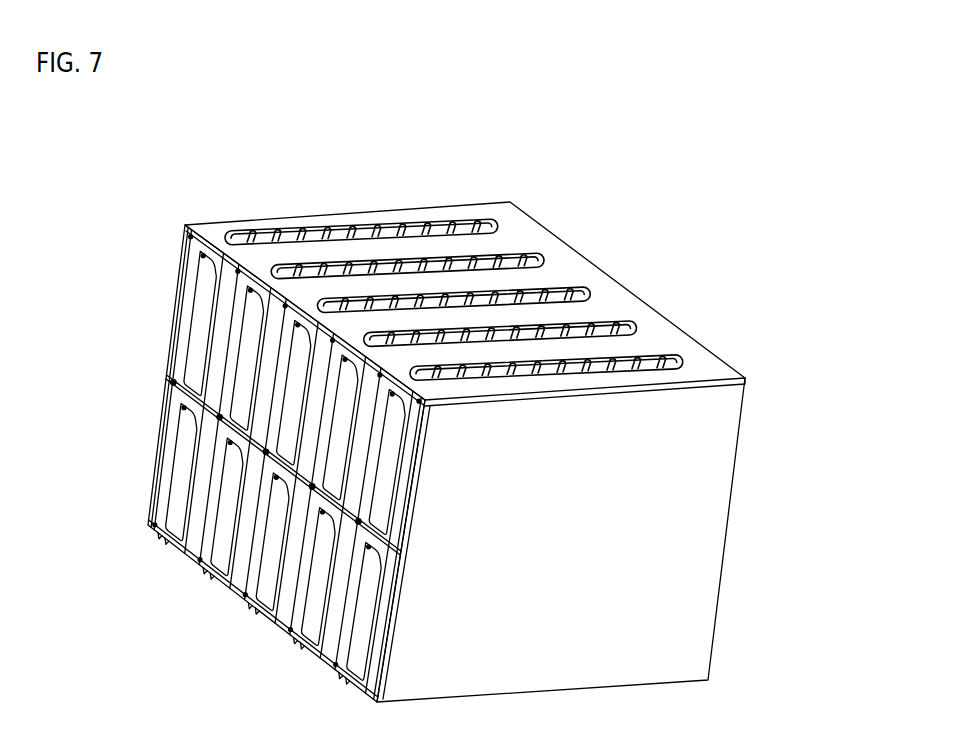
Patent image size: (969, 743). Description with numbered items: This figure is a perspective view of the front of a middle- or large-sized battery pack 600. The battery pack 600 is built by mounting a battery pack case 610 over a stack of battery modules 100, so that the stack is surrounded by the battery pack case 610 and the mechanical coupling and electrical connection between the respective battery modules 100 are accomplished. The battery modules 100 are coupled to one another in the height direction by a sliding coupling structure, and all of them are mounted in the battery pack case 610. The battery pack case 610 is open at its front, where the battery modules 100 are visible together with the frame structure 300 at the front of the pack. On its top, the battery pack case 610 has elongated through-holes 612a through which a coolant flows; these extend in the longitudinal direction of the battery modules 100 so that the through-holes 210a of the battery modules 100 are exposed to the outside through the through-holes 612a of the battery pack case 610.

The middle- or large-sized battery pack 600 is at (83, 233).
The battery pack case 610 is at (583, 262).
The through-hole 612a is at (458, 208).
The through-hole 210a is at (673, 362).
The cell frame 300 is at (190, 301).
The battery module 100 is at (167, 453).